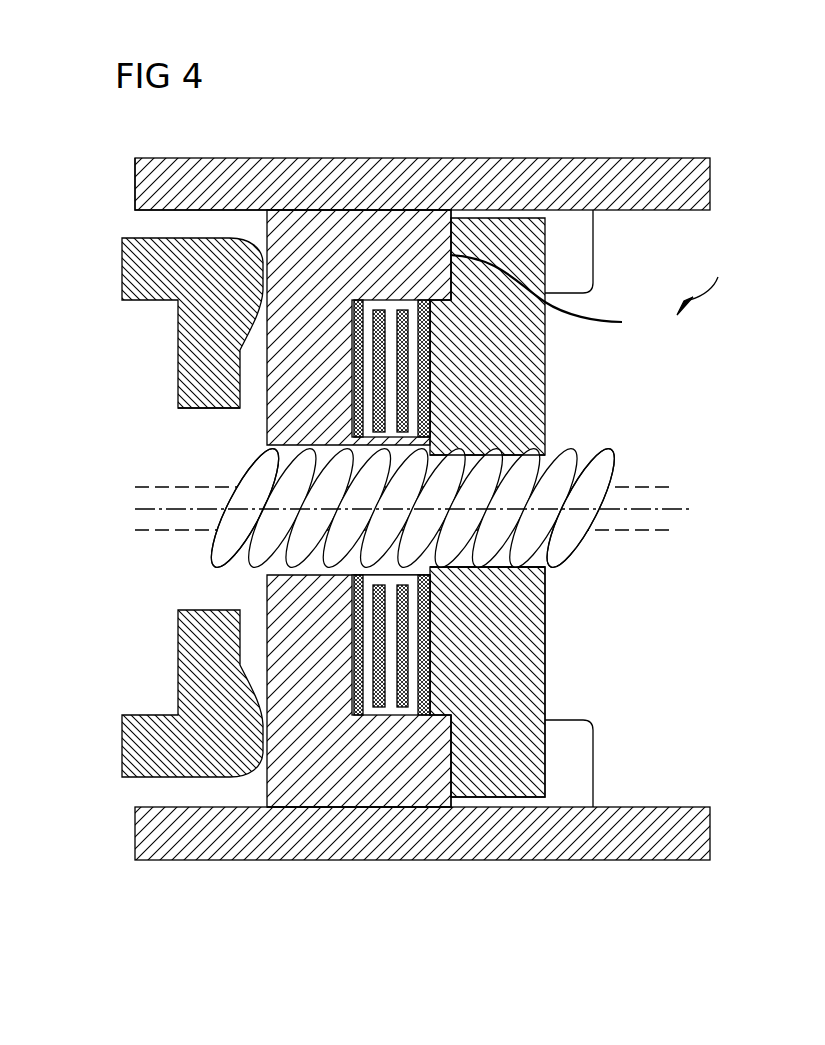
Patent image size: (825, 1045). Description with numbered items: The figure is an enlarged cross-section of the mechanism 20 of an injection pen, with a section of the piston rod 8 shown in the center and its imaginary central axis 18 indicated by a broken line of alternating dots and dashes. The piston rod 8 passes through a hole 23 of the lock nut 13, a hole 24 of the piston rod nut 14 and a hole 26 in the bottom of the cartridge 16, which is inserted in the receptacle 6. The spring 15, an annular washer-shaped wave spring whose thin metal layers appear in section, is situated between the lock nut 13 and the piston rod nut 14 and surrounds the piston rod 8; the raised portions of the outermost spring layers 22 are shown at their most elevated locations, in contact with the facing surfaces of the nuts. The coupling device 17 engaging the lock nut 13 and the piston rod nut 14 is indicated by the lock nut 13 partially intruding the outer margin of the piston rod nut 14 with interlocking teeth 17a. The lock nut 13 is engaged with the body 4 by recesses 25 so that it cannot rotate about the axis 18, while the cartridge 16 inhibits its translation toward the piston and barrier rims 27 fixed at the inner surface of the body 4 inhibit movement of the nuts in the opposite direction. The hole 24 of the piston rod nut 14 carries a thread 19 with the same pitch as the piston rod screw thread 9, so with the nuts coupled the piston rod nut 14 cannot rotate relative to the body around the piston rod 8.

The body 4 is at (683, 210).
The receptacle 6 is at (176, 222).
The piston rod 8 is at (620, 448).
The piston rod screw thread 9 is at (487, 682).
The lock nut 13 is at (267, 422).
The piston rod nut 14 is at (548, 327).
The spring 15 is at (408, 398).
The cartridge 16 is at (153, 300).
The coupling device 17 is at (432, 200).
The interlocking teeth 17a is at (559, 295).
The central axis 18 is at (678, 508).
The thread 19 is at (500, 443).
The mechanism 20 is at (704, 282).
The outermost spring layers 22 is at (399, 298).
The hole of the lock nut 23 is at (263, 572).
The hole of the piston rod nut 24 is at (548, 570).
The recesses 25 is at (334, 200).
The hole in the bottom of the cartridge 26 is at (200, 423).
The barrier rims 27 is at (590, 260).